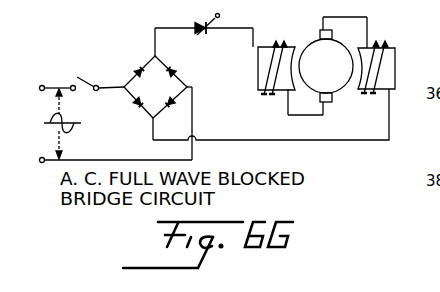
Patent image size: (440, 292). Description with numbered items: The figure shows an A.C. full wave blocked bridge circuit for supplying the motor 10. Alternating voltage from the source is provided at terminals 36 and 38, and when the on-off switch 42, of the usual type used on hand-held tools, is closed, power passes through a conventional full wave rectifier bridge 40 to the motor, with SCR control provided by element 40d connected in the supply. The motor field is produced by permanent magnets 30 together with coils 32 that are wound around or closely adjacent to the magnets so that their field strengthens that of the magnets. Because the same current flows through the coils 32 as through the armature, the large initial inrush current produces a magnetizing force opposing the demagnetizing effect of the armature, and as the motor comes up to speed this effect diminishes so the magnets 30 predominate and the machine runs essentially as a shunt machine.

The motor 10 is at (337, 64).
The permanent magnets 30 is at (257, 72).
The coils 32 is at (275, 42).
The terminal 36 is at (42, 84).
The terminal 38 is at (42, 163).
The full wave rectifier bridge 40 is at (144, 55).
The SCR element 40d is at (199, 33).
The on-off switch 42 is at (77, 76).